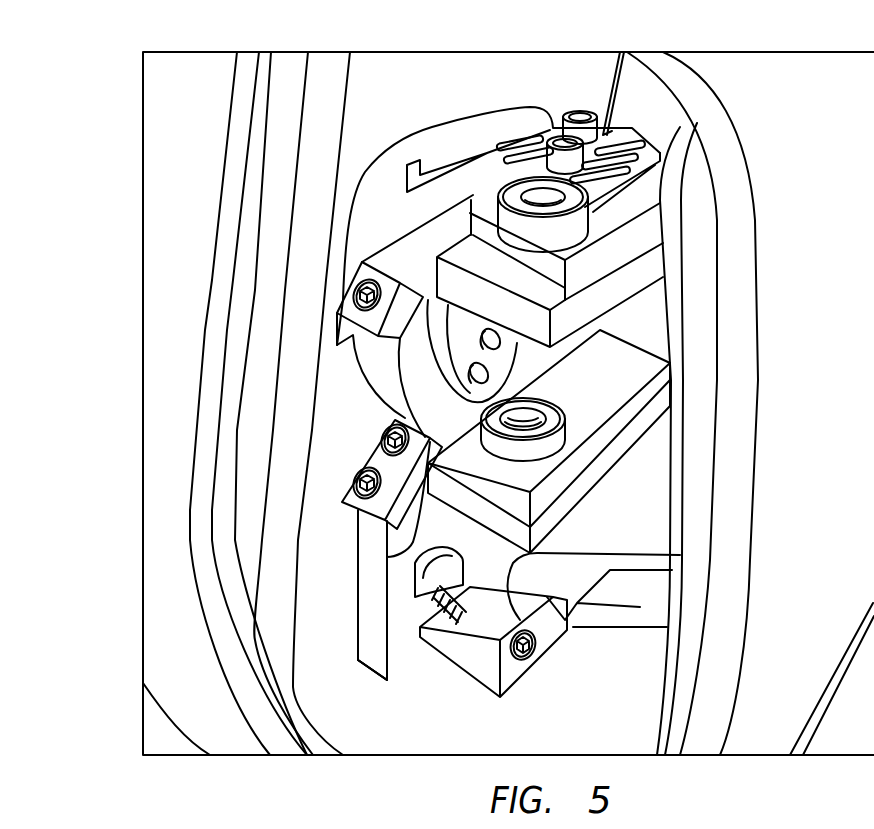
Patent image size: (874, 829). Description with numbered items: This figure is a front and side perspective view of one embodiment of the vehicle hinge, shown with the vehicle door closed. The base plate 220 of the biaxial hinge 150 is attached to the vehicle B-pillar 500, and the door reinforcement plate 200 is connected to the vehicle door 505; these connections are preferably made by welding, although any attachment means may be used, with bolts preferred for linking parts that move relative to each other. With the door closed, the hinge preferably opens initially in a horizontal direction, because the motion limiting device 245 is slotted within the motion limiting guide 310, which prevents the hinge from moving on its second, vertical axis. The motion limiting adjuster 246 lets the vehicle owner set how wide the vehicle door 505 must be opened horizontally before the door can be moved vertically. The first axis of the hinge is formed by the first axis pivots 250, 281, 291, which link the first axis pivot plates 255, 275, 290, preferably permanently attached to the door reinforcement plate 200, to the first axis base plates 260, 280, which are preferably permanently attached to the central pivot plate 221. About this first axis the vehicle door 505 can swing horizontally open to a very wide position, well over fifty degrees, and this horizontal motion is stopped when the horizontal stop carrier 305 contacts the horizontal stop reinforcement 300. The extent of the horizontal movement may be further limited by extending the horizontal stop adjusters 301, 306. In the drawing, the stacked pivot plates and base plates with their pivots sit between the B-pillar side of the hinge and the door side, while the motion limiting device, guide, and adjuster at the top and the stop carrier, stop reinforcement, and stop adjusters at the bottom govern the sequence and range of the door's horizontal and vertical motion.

The biaxial hinge 150 is at (632, 45).
The door reinforcement plate 200 is at (647, 100).
The base plate 220 is at (363, 202).
The central pivot plate 221 is at (370, 552).
The motion limiting device 245 is at (488, 147).
The motion limiting adjuster 246 is at (590, 137).
The first axis pivot 250 is at (540, 200).
The first axis pivot plate 255 is at (630, 240).
The first axis base plate 260 is at (627, 277).
The first axis pivot plate 275 is at (647, 410).
The first axis base plate 280 is at (647, 438).
The first axis pivot 281 is at (528, 422).
The first axis pivot plate 290 is at (640, 607).
The first axis pivot 291 is at (680, 555).
The horizontal stop reinforcement 300 is at (442, 571).
The horizontal stop adjuster 301 is at (358, 632).
The horizontal stop carrier 305 is at (507, 655).
The horizontal stop adjuster 306 is at (560, 655).
The motion limiting guide 310 is at (413, 167).
The vehicle B-pillar 500 is at (287, 447).
The vehicle door 505 is at (760, 738).